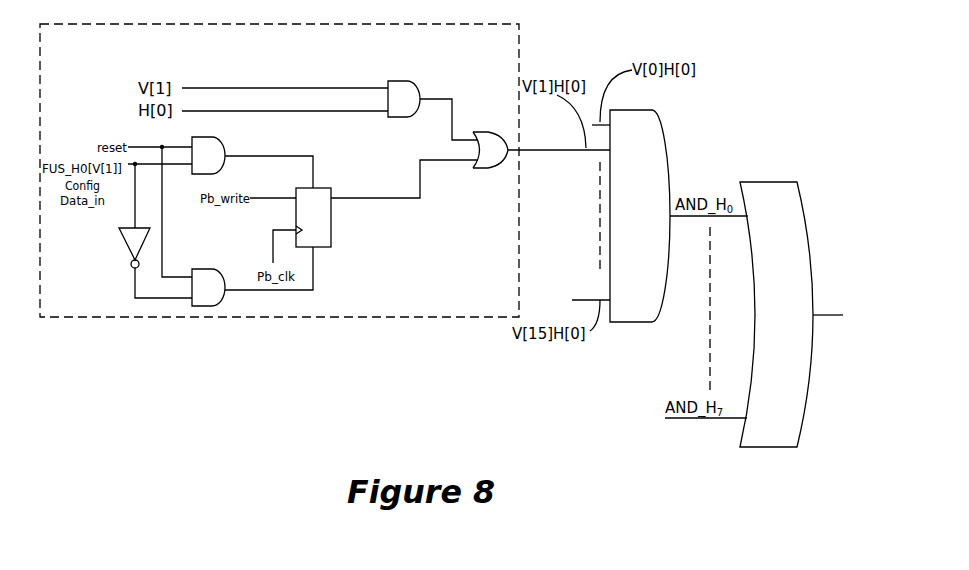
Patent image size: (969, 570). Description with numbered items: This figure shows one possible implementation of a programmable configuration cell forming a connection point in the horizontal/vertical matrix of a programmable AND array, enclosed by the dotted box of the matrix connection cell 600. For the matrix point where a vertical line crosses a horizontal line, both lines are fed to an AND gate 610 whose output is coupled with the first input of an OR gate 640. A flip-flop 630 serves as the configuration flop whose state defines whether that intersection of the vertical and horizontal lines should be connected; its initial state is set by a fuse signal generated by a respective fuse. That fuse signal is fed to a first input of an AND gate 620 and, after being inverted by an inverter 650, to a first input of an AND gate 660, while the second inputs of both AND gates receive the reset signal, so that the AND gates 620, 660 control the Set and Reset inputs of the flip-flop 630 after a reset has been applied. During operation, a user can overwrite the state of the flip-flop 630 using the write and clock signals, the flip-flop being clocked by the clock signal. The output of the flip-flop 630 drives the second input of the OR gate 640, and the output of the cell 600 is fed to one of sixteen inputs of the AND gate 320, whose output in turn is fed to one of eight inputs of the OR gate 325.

The matrix connection cell 600 is at (320, 24).
The AND gate 610 is at (410, 95).
The AND gate 620 is at (215, 152).
The flip-flop 630 is at (332, 235).
The OR gate 640 is at (490, 155).
The inverter 650 is at (130, 236).
The AND gate 660 is at (210, 273).
The AND gate 320 is at (659, 168).
The OR gate 325 is at (798, 212).